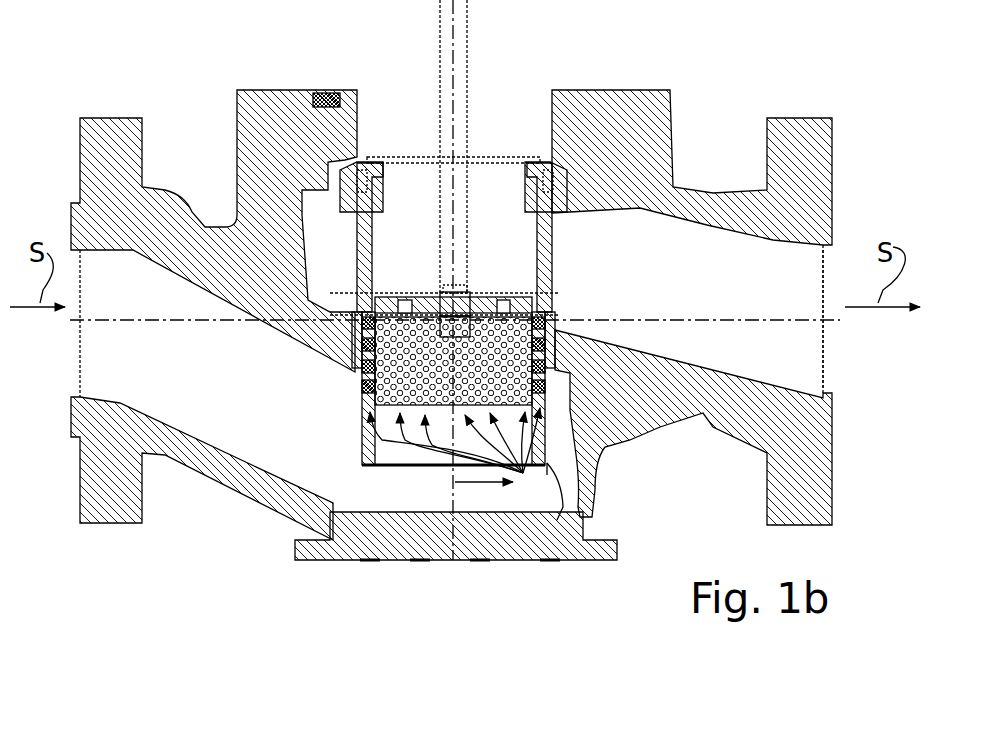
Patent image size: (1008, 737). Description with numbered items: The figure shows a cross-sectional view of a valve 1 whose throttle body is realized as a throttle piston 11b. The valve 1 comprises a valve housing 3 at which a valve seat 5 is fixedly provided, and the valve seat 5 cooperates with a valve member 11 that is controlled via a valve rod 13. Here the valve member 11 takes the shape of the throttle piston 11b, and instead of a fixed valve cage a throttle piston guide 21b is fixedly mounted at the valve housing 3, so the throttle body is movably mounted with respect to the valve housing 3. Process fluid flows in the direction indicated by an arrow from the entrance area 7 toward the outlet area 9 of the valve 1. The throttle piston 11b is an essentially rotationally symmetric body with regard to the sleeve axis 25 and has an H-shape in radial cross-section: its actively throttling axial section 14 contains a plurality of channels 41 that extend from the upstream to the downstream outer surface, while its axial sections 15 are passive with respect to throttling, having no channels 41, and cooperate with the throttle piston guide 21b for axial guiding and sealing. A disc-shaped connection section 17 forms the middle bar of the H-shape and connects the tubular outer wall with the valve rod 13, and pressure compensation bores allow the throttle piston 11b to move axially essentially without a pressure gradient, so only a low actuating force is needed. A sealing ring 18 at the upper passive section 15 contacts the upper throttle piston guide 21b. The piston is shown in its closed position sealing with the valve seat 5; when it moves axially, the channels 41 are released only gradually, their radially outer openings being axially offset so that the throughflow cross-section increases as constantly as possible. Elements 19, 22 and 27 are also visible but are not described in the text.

The valve 1 is at (182, 108).
The valve housing 3 is at (705, 207).
The valve seat 5 is at (350, 353).
The entrance area 7 is at (403, 492).
The outlet area 9 is at (747, 288).
The valve member 11 is at (583, 415).
The throttle piston 11b is at (363, 447).
The valve rod 13 is at (458, 145).
The actively throttling axial section 14 is at (357, 383).
The passive axial section 15 is at (350, 252).
The disc-shaped connection section 17 is at (388, 313).
The sealing ring 18 is at (327, 175).
The perforated cage wall 19 is at (407, 285).
The throttle piston guide 21b is at (560, 168).
The valve plug 22 is at (418, 0).
The sleeve axis 25 is at (505, 0).
The bottom cover 27 is at (480, 630).
The channels 41 is at (560, 500).